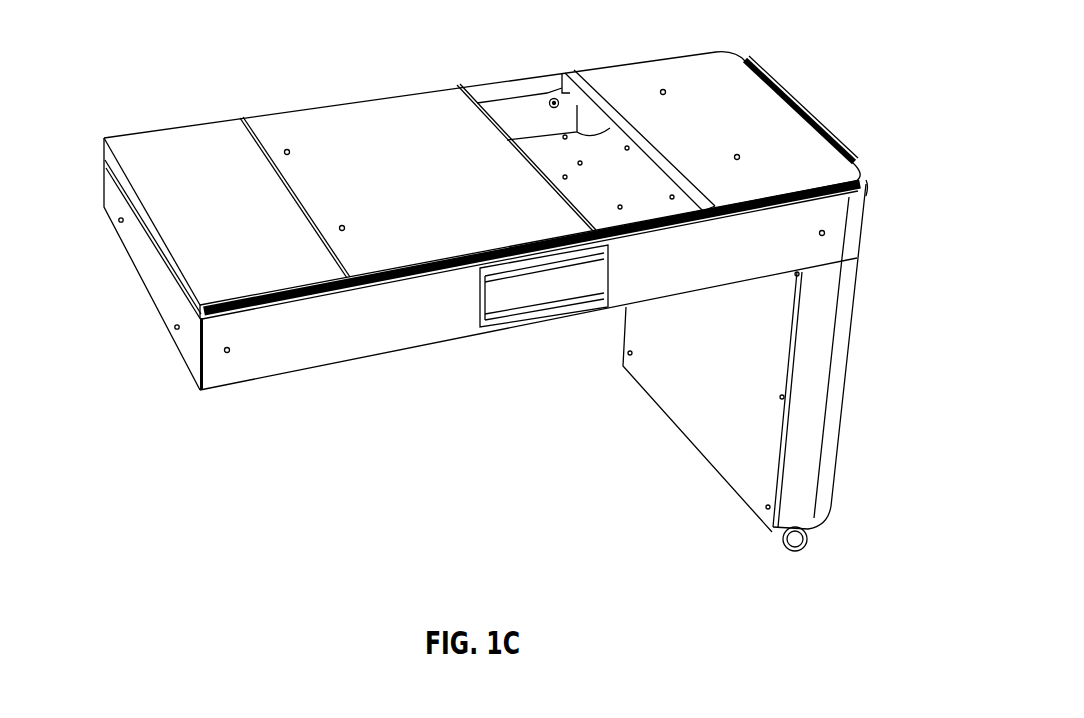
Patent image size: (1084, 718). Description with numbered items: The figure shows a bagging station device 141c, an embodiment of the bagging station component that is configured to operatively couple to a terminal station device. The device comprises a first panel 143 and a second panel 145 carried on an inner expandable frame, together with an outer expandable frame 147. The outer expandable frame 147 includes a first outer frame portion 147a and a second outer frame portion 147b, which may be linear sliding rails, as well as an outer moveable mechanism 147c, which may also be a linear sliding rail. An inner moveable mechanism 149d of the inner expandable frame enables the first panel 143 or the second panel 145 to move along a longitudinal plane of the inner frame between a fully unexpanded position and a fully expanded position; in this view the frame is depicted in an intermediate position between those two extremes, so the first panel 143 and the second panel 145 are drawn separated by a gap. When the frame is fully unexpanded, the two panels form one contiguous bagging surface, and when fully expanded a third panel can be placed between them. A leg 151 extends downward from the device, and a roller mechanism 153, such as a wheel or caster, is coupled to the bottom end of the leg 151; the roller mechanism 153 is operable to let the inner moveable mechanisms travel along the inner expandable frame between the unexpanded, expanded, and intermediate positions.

The bagging station device 141c is at (151, 47).
The first panel 143 is at (441, 191).
The second panel 145 is at (738, 129).
The inner moveable mechanism 149d is at (523, 110).
The outer expandable frame 147 is at (453, 380).
The first outer frame portion 147a is at (215, 368).
The second outer frame portion 147b is at (824, 234).
The outer moveable mechanism 147c is at (545, 295).
The leg 151 is at (812, 453).
The roller mechanism 153 is at (796, 552).